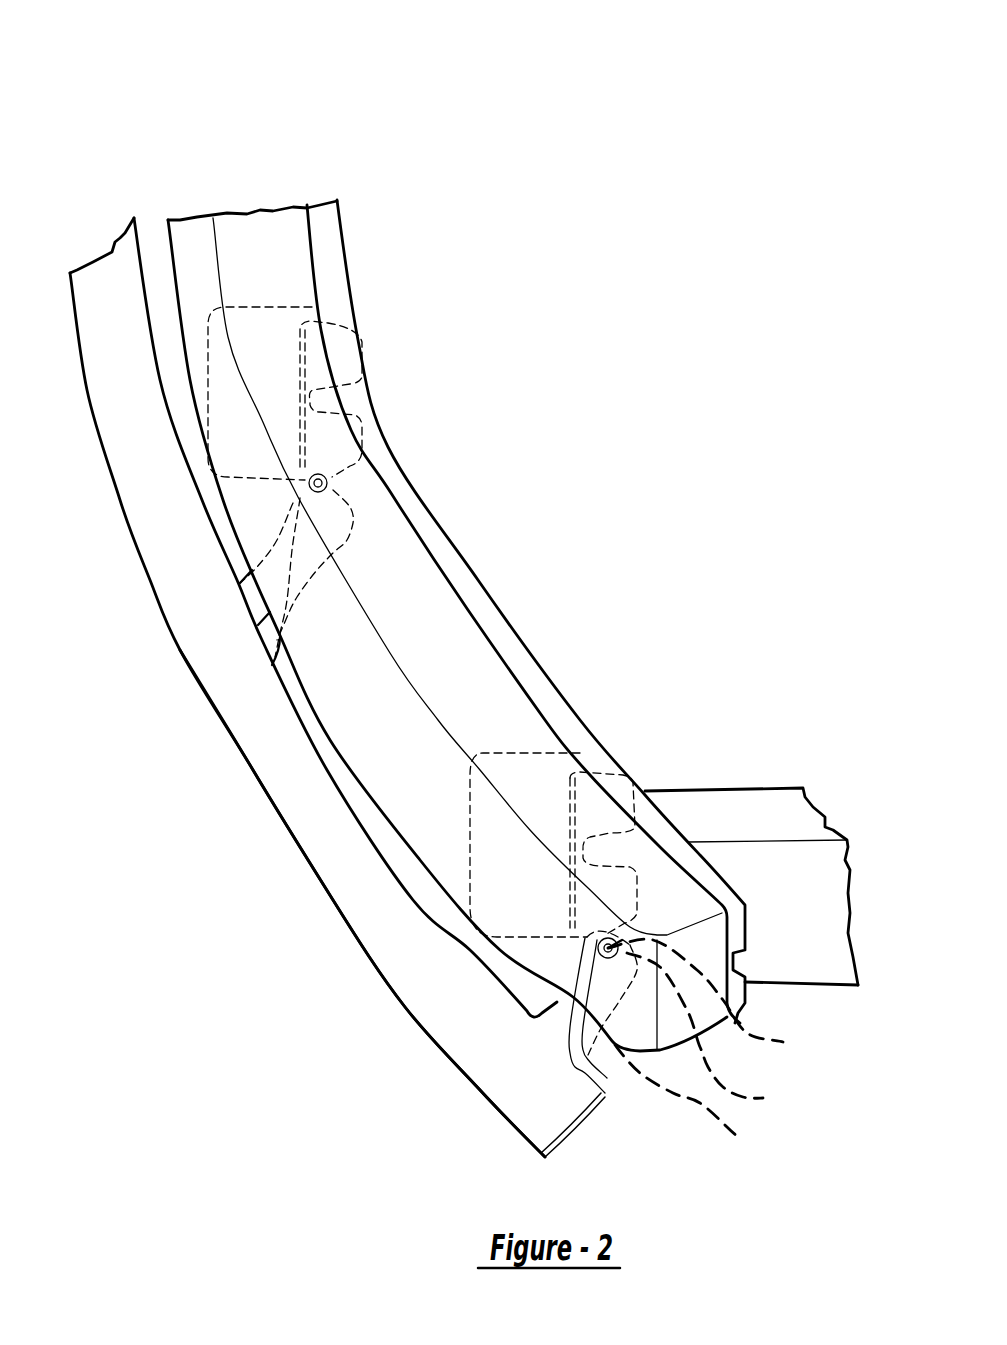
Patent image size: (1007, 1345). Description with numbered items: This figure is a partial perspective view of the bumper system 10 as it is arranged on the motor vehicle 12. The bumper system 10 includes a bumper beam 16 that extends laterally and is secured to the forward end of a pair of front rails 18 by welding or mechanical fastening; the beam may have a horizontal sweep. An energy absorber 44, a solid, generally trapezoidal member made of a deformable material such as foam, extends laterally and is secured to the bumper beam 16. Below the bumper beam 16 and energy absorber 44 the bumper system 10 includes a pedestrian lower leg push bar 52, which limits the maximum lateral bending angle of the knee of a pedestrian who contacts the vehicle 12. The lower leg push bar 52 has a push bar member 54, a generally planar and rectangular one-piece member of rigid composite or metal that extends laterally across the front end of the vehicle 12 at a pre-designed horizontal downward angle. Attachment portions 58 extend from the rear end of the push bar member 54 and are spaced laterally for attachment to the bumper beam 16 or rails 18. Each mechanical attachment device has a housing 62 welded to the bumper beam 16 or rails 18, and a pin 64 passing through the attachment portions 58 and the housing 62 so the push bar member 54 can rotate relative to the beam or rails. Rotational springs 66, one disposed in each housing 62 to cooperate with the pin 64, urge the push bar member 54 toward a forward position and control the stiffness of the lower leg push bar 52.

The bumper system 10 is at (88, 157).
The motor vehicle 12 is at (807, 787).
The bumper beam 16 is at (420, 494).
The front rails 18 is at (803, 927).
The energy absorber 44 is at (465, 667).
The pedestrian lower leg push bar 52 is at (403, 1003).
The push bar member 54 is at (477, 1040).
The attachment portions 58 is at (562, 1018).
The housing 62 is at (707, 1033).
The pin 64 is at (708, 998).
The springs 66 is at (687, 1101).